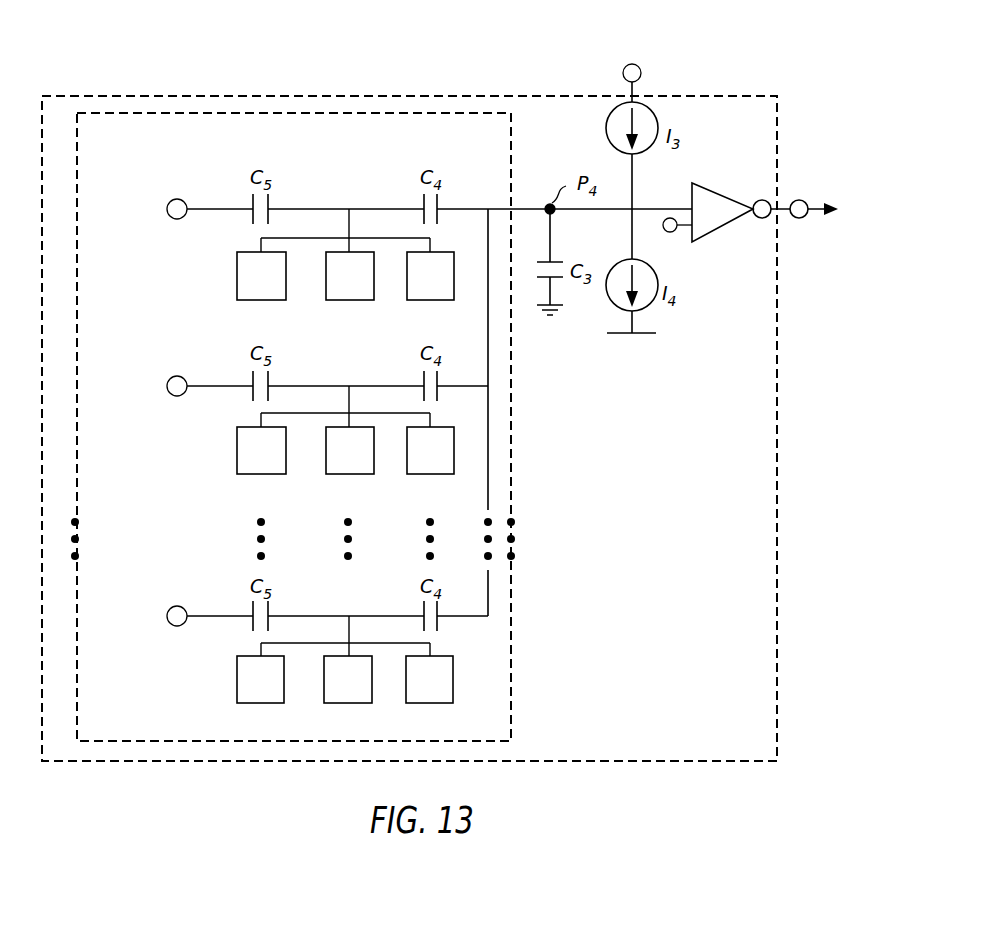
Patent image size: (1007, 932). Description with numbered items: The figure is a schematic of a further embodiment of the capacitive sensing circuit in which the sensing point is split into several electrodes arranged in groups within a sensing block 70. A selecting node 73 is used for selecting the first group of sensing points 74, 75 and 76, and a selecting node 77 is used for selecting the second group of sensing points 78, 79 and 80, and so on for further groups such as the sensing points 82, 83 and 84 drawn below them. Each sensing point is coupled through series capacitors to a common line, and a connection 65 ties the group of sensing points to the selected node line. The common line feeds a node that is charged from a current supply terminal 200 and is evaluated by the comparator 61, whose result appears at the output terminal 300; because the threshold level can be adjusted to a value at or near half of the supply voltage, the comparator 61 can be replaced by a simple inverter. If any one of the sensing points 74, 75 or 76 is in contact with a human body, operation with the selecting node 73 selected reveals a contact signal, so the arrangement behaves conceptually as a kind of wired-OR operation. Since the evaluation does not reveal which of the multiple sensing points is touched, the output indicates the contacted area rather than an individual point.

The comparator 61 is at (723, 228).
The connection line from sense pad bus to input line 65 is at (350, 206).
The sensing circuit block 70 is at (778, 443).
The selecting node 73 is at (166, 209).
The sensing point 74 is at (261, 290).
The sensing point 75 is at (350, 290).
The sensing point 76 is at (430, 290).
The selecting node 77 is at (166, 386).
The sensing point 78 is at (261, 466).
The sensing point 79 is at (350, 466).
The sensing point 80 is at (430, 466).
The sense pad SP 82 is at (260, 695).
The sense pad SP 83 is at (348, 695).
The sense pad SP 84 is at (429, 695).
The current supply terminal 200 is at (631, 64).
The output terminal 300 is at (804, 218).